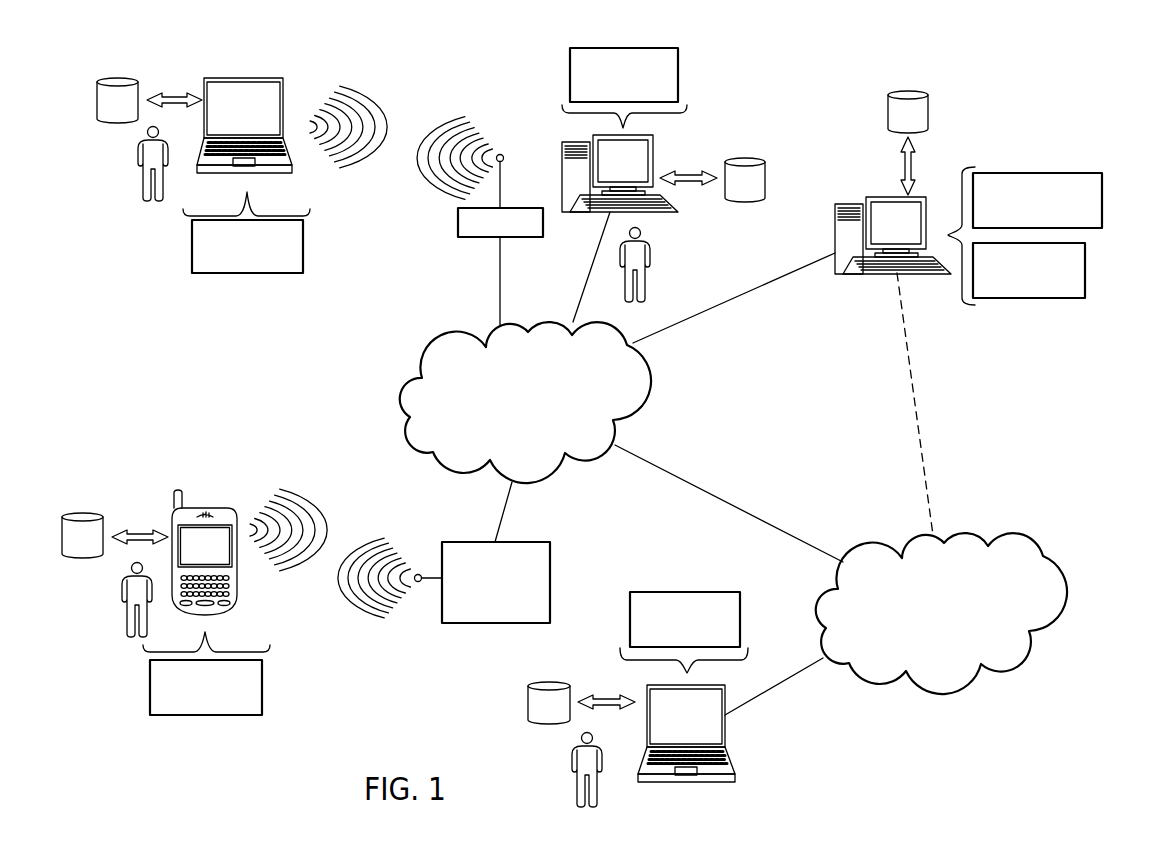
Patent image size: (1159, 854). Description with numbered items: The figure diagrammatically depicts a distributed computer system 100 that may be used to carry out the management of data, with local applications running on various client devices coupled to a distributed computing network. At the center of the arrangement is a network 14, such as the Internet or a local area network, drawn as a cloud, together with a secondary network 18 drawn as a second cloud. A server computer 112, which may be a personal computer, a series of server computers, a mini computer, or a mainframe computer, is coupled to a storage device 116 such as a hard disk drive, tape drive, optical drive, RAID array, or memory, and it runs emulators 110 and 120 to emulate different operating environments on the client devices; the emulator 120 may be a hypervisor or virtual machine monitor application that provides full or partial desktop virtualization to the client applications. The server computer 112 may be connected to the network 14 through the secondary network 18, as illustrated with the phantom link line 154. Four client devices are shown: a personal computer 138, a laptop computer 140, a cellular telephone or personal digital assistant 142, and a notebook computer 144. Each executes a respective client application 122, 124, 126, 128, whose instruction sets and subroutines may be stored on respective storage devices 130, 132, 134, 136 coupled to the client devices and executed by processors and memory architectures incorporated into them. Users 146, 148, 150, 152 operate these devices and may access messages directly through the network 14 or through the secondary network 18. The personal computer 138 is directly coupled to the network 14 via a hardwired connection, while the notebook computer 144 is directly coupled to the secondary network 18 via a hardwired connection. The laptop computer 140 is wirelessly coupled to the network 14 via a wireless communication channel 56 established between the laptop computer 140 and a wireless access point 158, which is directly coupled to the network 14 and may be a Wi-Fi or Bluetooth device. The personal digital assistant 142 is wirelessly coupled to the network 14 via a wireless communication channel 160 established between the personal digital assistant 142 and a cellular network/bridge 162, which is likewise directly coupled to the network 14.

The distributed computer system 100 is at (1077, 90).
The network 14 is at (653, 398).
The network 18 is at (1010, 530).
The wireless signal 56 is at (408, 122).
The emulator 110 is at (1068, 173).
The server computer 112 is at (849, 203).
The storage device 116 is at (908, 92).
The emulator (virtual machine monitor application) 120 is at (1055, 298).
The client application 122 is at (678, 75).
The client application 124 is at (303, 245).
The client application 126 is at (262, 688).
The client application 128 is at (711, 592).
The storage device 130 is at (747, 159).
The storage device 132 is at (131, 60).
The storage device 134 is at (86, 513).
The storage device 136 is at (549, 682).
The personal computer 138 is at (653, 158).
The laptop computer 140 is at (283, 87).
The cellular telephone (personal digital assistant) 142 is at (210, 508).
The notebook computer 144 is at (725, 720).
The user 146 is at (652, 255).
The user 148 is at (137, 155).
The user 150 is at (121, 593).
The user 152 is at (572, 762).
The phantom link line 154 is at (928, 396).
The wireless access point 158 is at (458, 220).
The wireless communication channel 160 is at (340, 530).
The cellular network/bridge 162 is at (550, 573).